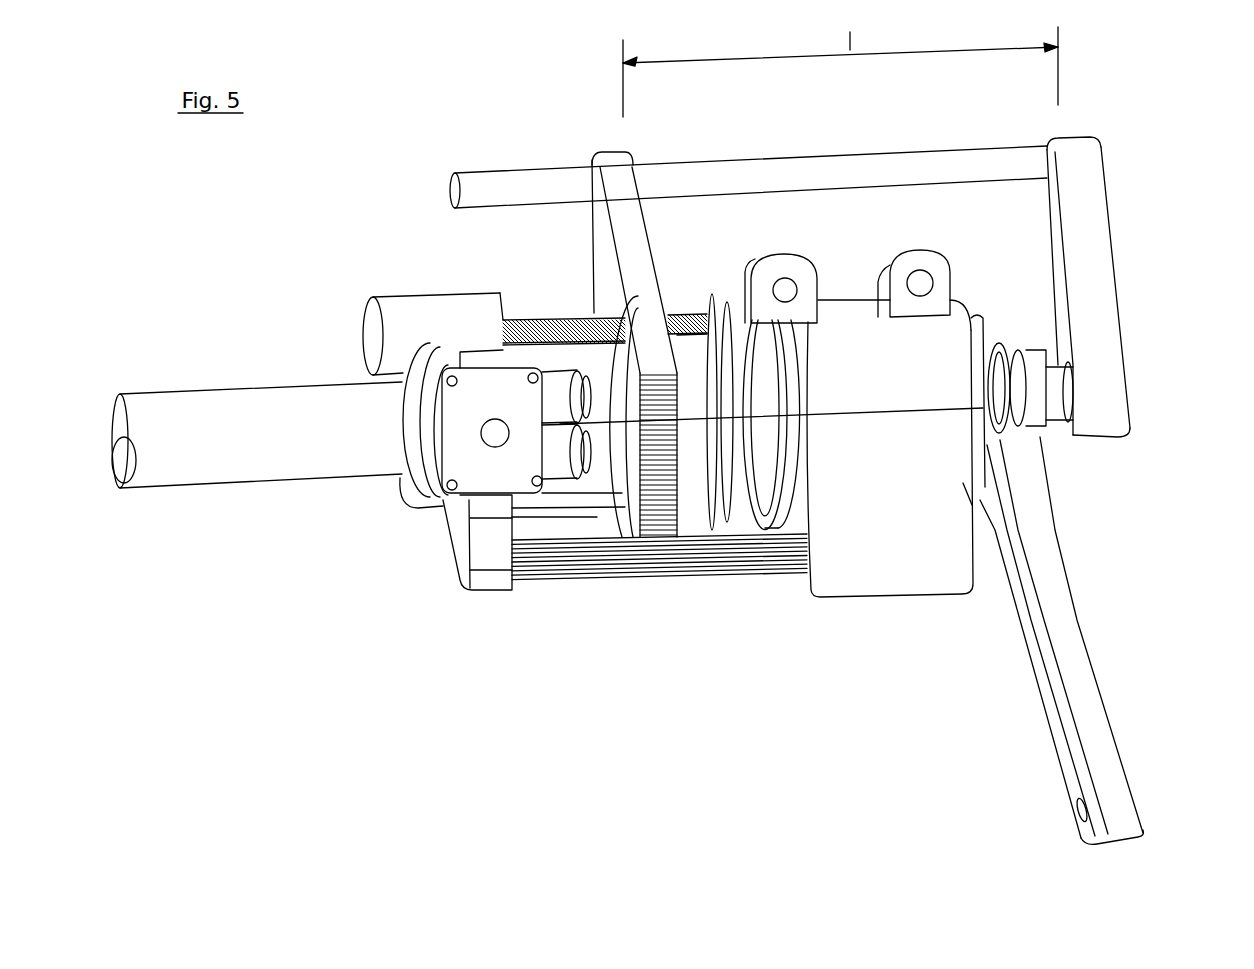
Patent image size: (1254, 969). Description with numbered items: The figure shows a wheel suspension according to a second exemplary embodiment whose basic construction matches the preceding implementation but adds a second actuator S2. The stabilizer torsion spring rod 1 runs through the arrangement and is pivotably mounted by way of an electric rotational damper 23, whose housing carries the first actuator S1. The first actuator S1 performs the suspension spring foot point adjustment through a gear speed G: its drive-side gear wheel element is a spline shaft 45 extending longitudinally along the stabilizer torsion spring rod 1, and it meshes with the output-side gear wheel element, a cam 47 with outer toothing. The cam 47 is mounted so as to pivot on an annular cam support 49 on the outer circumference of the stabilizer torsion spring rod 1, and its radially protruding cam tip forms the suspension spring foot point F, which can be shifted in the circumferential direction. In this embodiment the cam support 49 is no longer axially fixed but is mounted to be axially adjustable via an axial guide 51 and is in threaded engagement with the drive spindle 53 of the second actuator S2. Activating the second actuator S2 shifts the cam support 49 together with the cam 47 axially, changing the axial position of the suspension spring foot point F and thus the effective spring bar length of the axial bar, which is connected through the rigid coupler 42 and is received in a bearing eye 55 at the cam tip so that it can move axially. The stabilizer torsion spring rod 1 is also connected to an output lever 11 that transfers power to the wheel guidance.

The stabilizer torsion spring rod 1 is at (172, 393).
The second actuator S2 is at (416, 296).
The drive spindle 53 is at (536, 322).
The bearing eye 55 is at (600, 187).
The suspension spring foot point F is at (583, 152).
The axial guide 51 is at (550, 500).
The gear speed G is at (485, 627).
The cam support 49 is at (622, 517).
The cam 47 is at (655, 517).
The spline shaft 45 is at (672, 530).
The electric rotational damper 23 is at (858, 352).
The first actuator S1 is at (910, 598).
The coupler 42 is at (1113, 268).
The output lever 11 is at (1093, 667).